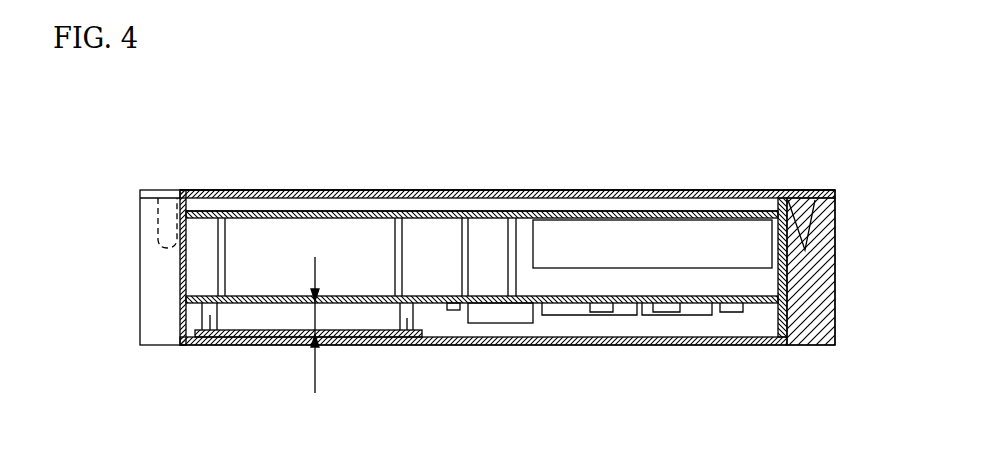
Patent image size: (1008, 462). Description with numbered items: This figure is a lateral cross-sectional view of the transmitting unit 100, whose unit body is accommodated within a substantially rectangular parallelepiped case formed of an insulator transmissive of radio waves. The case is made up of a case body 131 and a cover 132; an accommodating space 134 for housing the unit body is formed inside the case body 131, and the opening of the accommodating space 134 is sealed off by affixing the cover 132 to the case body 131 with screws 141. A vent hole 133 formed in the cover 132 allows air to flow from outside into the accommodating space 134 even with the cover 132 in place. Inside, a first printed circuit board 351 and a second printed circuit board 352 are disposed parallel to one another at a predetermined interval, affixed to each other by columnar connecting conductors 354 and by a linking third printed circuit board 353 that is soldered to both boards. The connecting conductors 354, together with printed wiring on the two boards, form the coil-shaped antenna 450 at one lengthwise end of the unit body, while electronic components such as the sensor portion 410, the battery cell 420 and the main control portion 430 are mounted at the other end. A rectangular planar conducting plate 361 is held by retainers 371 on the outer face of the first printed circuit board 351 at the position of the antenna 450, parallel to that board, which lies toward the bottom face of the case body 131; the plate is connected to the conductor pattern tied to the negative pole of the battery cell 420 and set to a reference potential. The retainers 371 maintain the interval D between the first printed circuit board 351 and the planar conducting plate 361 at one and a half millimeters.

The transmitting unit 100 is at (620, 148).
The case body 131 is at (153, 313).
The cover 132 is at (463, 189).
The vent hole 133 is at (232, 190).
The accommodating space 134 is at (330, 207).
The screws 141 is at (163, 197).
The first printed circuit board 351 is at (442, 305).
The second printed circuit board 352 is at (693, 212).
The third printed circuit board 353 is at (790, 325).
The columnar connecting conductors 354 is at (223, 247).
The planar conducting plate 361 is at (342, 336).
The retainers 371 is at (208, 340).
The sensor portion 410 is at (497, 315).
The battery cell 420 is at (617, 257).
The main control portion 430 is at (692, 312).
The antenna 450 is at (270, 313).
The interval D is at (317, 313).